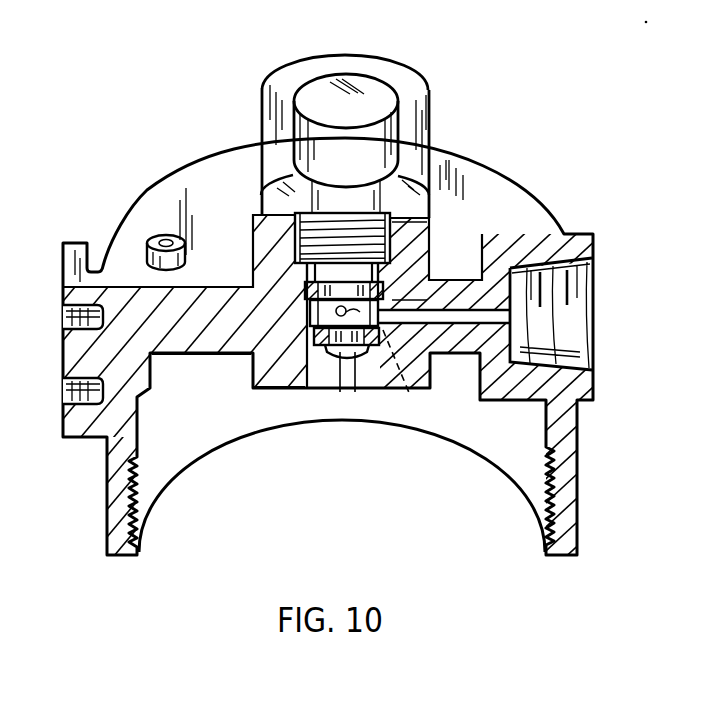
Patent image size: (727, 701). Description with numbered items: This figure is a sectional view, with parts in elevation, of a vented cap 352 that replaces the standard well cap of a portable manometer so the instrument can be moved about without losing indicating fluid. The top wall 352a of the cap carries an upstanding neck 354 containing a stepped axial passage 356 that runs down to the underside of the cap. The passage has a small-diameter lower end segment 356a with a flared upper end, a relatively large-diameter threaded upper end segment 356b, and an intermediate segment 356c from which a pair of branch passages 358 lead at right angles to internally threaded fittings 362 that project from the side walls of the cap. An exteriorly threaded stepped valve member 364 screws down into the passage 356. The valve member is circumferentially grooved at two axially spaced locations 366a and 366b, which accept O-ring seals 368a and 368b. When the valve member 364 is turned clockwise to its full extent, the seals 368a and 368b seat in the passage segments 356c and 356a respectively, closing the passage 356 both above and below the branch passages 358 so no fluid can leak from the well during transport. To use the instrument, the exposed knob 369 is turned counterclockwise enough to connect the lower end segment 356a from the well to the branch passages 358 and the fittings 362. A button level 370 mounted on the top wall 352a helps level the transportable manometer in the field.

The vented cap 352 is at (146, 190).
The top wall 352a is at (527, 139).
The upstanding neck 354 is at (430, 232).
The stepped axial passage 356 is at (421, 251).
The lower end segment 356a is at (355, 393).
The upper end segment 356b is at (297, 249).
The intermediate segment 356c is at (300, 290).
The branch passages 358 is at (498, 317).
The internally threaded fittings 362 is at (401, 66).
The valve member 364 is at (268, 200).
The circumferential groove 366a is at (450, 309).
The circumferential groove 366b is at (340, 390).
The O-ring seal 368a is at (250, 357).
The O-ring seal 368b is at (277, 424).
The knob 369 is at (313, 93).
The button level 370 is at (150, 237).